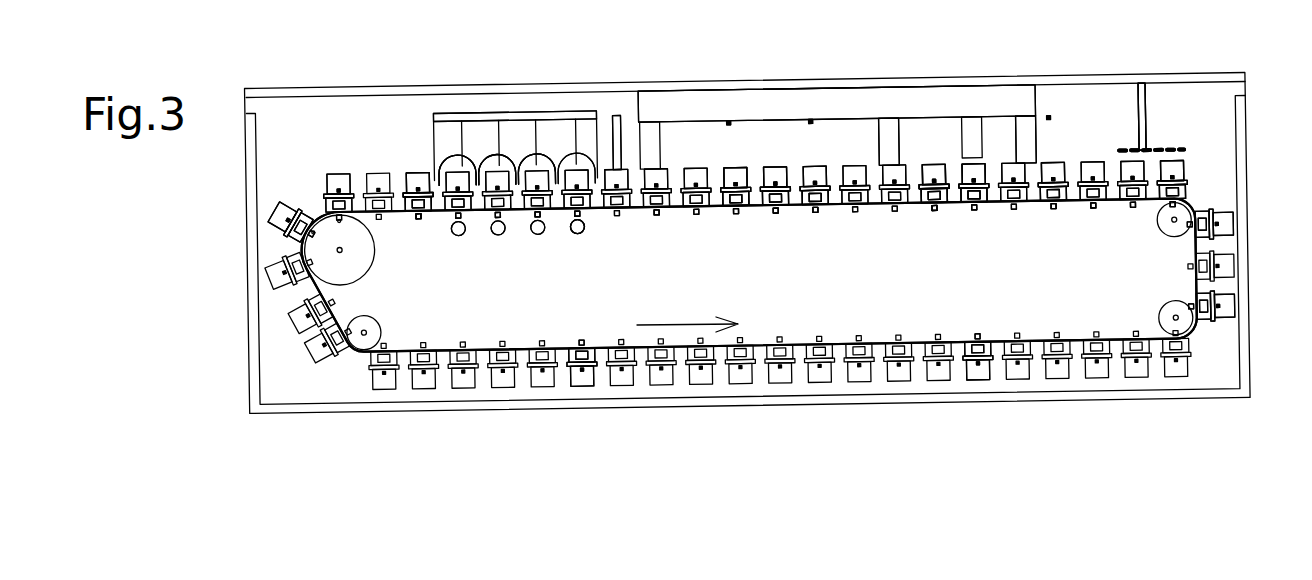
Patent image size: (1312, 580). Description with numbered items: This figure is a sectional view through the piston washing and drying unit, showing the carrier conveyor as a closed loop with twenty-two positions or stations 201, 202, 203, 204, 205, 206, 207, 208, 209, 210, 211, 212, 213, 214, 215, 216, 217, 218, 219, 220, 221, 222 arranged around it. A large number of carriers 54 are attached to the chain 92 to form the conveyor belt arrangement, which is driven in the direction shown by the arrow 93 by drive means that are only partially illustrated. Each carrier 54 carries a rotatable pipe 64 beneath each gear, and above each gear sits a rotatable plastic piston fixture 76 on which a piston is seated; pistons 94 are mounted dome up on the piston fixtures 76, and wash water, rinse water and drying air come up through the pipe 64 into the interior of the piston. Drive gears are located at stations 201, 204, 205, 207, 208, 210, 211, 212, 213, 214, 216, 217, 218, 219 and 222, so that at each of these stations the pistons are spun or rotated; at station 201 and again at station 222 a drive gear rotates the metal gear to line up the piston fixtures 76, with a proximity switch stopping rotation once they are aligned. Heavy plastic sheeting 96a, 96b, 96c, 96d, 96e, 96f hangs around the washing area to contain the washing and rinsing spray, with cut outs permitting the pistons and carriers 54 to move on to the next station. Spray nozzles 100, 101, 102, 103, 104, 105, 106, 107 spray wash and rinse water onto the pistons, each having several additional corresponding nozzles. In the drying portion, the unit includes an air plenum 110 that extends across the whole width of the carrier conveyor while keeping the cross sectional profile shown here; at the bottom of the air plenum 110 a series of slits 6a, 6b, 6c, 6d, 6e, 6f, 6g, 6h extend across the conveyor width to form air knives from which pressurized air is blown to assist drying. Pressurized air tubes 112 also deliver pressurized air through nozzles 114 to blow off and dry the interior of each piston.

The slit 6a is at (462, 178).
The slit 6b is at (473, 180).
The slit 6c is at (480, 182).
The slit 6d is at (513, 180).
The slit 6e is at (520, 173).
The slit 6f is at (533, 157).
The slit 6g is at (550, 173).
The slit 6h is at (598, 228).
The carrier 54 is at (1217, 322).
The rotatable pipe 64 is at (1092, 206).
The piston fixture 76 is at (1128, 170).
The chain 92 is at (1193, 202).
The arrow 93 is at (698, 322).
The piston 94 is at (1155, 150).
The plastic sheeting 96a is at (1147, 123).
The plastic sheeting 96b is at (1005, 150).
The plastic sheeting 96c is at (960, 202).
The plastic sheeting 96d is at (878, 165).
The plastic sheeting 96e is at (788, 185).
The plastic sheeting 96f is at (641, 168).
The spray nozzle 100 is at (1050, 123).
The spray nozzle 101 is at (1052, 207).
The spray nozzle 102 is at (952, 205).
The spray nozzle 103 is at (935, 205).
The spray nozzle 104 is at (812, 127).
The spray nozzle 105 is at (822, 207).
The spray nozzle 106 is at (730, 127).
The spray nozzle 107 is at (727, 207).
The air plenum 110 is at (437, 180).
The pressurized air tube 112 is at (452, 234).
The nozzle 114 is at (452, 222).
The station 201 is at (1185, 150).
The station 202 is at (1145, 150).
The station 203 is at (1095, 172).
The station 204 is at (1055, 172).
The station 205 is at (1014, 172).
The station 206 is at (975, 155).
The station 207 is at (940, 172).
The station 208 is at (900, 172).
The station 209 is at (855, 172).
The station 210 is at (815, 172).
The station 211 is at (770, 172).
The station 212 is at (735, 172).
The station 213 is at (695, 172).
The station 214 is at (660, 172).
The station 215 is at (615, 178).
The station 216 is at (573, 173).
The station 217 is at (528, 172).
The station 218 is at (493, 173).
The station 219 is at (467, 180).
The station 220 is at (413, 173).
The station 221 is at (440, 182).
The station 222 is at (337, 173).